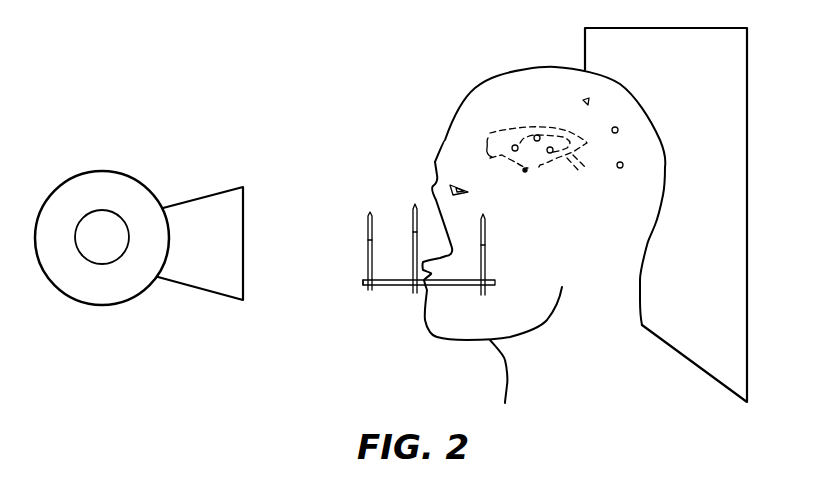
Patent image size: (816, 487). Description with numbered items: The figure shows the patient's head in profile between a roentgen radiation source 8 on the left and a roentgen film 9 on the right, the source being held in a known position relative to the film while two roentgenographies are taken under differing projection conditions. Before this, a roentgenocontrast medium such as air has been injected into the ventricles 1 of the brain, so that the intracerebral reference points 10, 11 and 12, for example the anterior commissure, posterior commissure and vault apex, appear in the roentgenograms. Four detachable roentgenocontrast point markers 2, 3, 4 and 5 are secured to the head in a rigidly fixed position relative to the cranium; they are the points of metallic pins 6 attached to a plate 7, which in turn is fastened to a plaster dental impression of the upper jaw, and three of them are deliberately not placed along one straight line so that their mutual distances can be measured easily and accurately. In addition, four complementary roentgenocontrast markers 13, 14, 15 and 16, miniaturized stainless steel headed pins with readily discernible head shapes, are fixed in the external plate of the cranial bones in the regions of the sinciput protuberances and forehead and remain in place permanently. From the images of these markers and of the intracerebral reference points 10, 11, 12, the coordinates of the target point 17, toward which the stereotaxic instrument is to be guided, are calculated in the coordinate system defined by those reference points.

The ventricles 1 is at (484, 146).
The detachable roentgenocontrast point marker 2 is at (486, 218).
The detachable roentgenocontrast point marker 3 is at (415, 207).
The detachable roentgenocontrast point marker 4 is at (367, 216).
The detachable roentgenocontrast point marker 5 is at (365, 288).
The metallic pins 6 is at (367, 250).
The plate 7 is at (452, 285).
The roentgen radiation source 8 is at (107, 190).
The roentgen film 9 is at (678, 45).
The intracerebral reference point 10 is at (514, 152).
The intracerebral reference point 11 is at (552, 146).
The intracerebral reference point 12 is at (538, 135).
The complementary roentgenocontrast marker 13 is at (589, 102).
The complementary roentgenocontrast marker 14 is at (618, 131).
The complementary roentgenocontrast marker 15 is at (490, 106).
The complementary roentgenocontrast marker 16 is at (623, 166).
The target point 17 is at (525, 170).